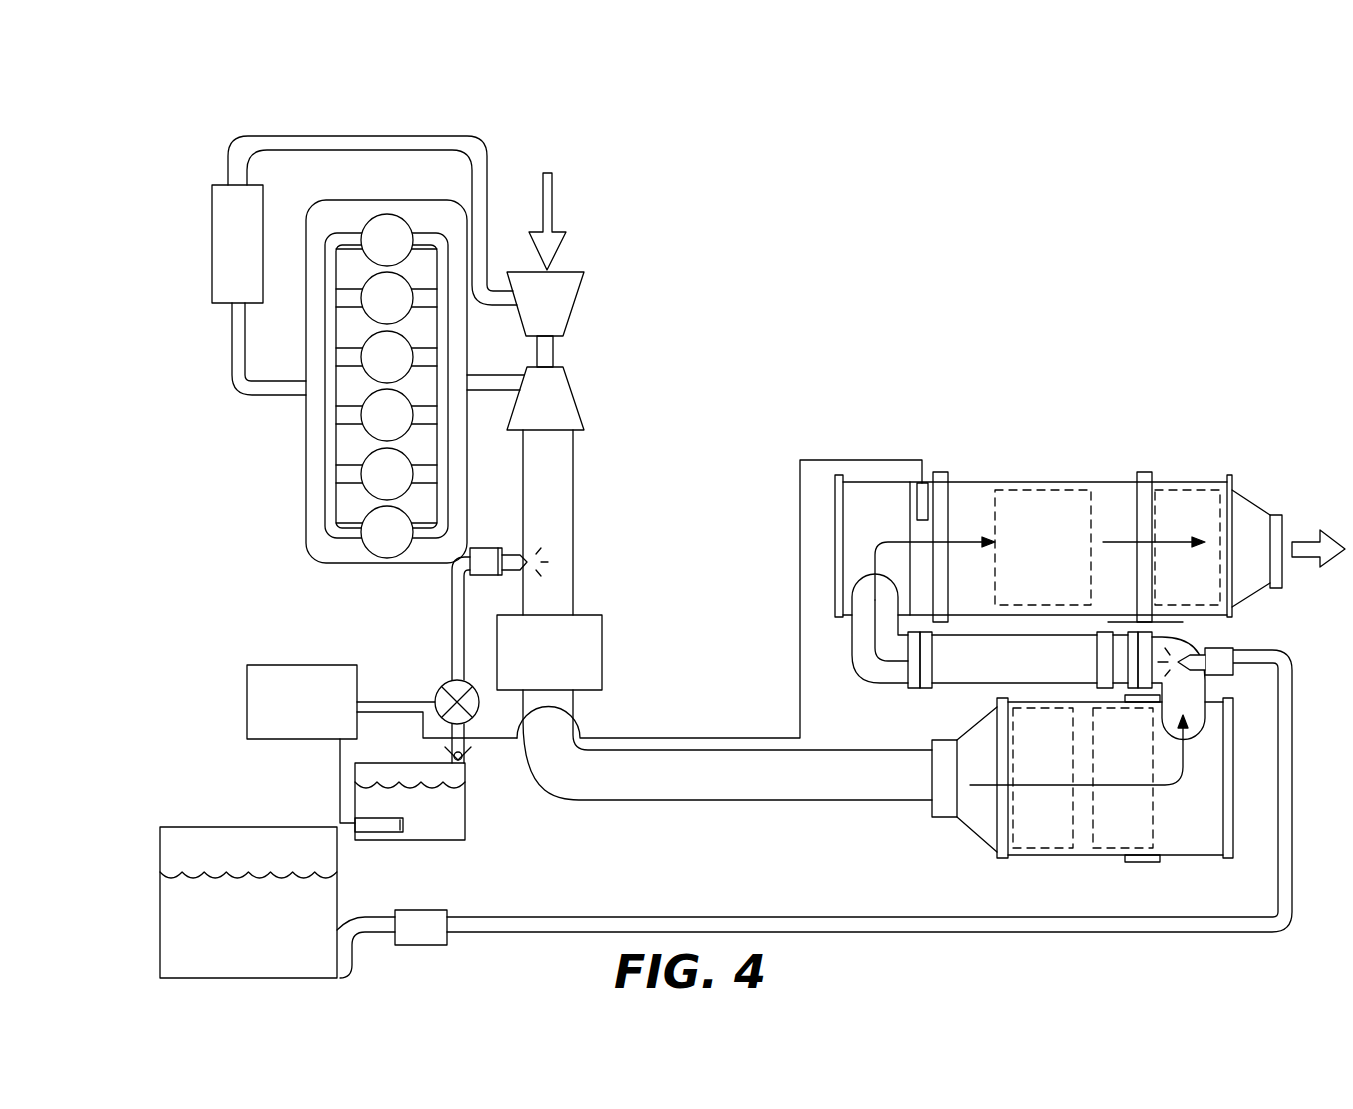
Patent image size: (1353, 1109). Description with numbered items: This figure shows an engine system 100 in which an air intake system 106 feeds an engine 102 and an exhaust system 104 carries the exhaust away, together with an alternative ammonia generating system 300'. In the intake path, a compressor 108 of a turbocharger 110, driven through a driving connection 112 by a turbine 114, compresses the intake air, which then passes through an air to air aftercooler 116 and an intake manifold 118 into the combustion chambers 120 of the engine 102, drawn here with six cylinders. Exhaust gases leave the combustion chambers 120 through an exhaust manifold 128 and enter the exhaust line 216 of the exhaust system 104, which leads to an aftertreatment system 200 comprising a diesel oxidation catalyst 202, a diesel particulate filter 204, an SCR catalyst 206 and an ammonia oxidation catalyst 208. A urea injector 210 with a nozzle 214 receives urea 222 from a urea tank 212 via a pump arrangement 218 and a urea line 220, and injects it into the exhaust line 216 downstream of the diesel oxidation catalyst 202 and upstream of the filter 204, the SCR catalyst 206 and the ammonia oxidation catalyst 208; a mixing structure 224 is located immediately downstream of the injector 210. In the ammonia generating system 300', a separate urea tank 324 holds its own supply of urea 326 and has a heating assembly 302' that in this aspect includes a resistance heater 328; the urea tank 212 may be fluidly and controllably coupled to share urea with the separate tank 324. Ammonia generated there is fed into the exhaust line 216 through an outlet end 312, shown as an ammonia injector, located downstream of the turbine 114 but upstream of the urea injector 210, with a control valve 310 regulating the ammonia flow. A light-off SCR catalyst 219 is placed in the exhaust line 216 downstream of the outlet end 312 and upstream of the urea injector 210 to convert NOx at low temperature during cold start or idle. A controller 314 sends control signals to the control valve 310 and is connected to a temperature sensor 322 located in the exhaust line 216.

The engine system 100 is at (738, 322).
The engine 102 is at (333, 215).
The exhaust system 104 is at (766, 600).
The air intake system 106 is at (358, 118).
The compressor 108 is at (565, 296).
The turbocharger 110 is at (660, 392).
The driving connection 112 is at (565, 352).
The turbine 114 is at (565, 396).
The air to air aftercooler 116 is at (230, 248).
The intake manifold 118 is at (332, 298).
The combustion chambers 120 is at (390, 225).
The exhaust manifold 128 is at (443, 413).
The aftertreatment system 200 is at (943, 420).
The diesel oxidation catalyst 202 is at (1027, 825).
The diesel particulate filter 204 is at (1107, 825).
The selective catalytic reduction catalyst 206 is at (1027, 593).
The ammonia oxidation catalyst 208 is at (1174, 593).
The urea injector 210 is at (1232, 650).
The urea tank 212 is at (345, 888).
The nozzle 214 is at (1195, 655).
The exhaust line 216 is at (553, 487).
The pump arrangement 218 is at (427, 922).
The SCR catalyst 219 is at (580, 653).
The urea line 220 is at (475, 923).
The reductant supply (urea) 222 is at (271, 928).
The mixing structures 224 is at (1055, 655).
The ammonia generating system 300' is at (434, 797).
The heating assembly 302' is at (429, 845).
The control valve 310 is at (452, 690).
The outlet end of ammonia line 312 is at (516, 558).
The controller 314 is at (289, 715).
The temperature sensor 322 is at (920, 495).
The separate urea tank 324 is at (465, 797).
The urea 326 is at (425, 822).
The resistance heater 328 is at (384, 821).